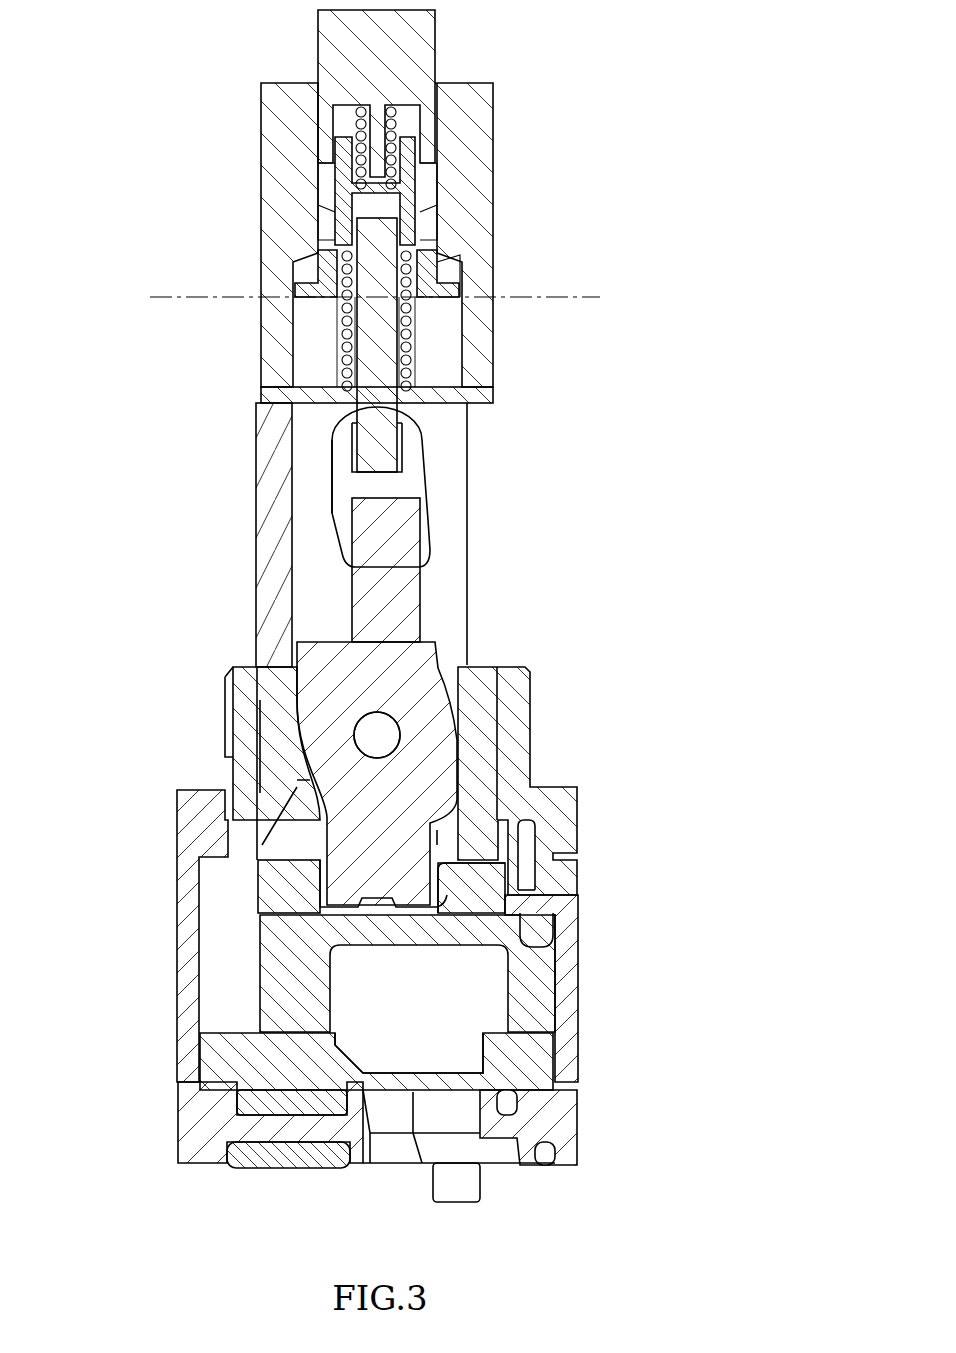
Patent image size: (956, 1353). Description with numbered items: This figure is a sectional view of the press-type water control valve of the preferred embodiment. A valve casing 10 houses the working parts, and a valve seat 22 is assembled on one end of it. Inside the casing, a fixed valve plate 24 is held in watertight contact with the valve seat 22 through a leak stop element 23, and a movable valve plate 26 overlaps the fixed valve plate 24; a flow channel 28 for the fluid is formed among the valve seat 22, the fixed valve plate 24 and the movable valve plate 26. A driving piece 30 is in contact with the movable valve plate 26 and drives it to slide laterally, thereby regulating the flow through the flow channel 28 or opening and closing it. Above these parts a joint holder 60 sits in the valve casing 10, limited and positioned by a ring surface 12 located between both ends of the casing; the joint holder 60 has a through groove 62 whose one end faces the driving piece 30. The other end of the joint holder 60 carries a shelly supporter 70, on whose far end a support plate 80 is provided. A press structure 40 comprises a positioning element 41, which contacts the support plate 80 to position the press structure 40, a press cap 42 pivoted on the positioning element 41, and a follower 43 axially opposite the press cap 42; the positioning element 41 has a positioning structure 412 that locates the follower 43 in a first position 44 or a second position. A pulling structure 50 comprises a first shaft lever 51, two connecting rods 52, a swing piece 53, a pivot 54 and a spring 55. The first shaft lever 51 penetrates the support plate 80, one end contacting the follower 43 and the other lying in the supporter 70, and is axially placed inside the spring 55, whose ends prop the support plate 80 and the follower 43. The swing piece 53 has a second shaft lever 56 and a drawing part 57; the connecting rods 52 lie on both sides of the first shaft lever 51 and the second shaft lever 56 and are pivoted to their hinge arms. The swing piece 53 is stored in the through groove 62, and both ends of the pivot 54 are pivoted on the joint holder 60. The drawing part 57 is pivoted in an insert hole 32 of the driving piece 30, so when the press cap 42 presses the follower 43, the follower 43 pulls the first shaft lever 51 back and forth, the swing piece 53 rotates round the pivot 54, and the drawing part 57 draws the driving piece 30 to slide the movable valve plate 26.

The valve casing 10 is at (177, 948).
The ring surface 12 is at (228, 843).
The valve seat 22 is at (193, 1118).
The leak stop element 23 is at (255, 1098).
The fixed valve plate 24 is at (225, 1052).
The movable valve plate 26 is at (275, 985).
The flow channel 28 is at (443, 1052).
The driving piece 30 is at (280, 880).
The insert hole 32 is at (320, 897).
The press structure 40 is at (497, 157).
The positioning element 41 is at (261, 222).
The press cap 42 is at (318, 55).
The positioning structure 412 is at (320, 210).
The follower 43 is at (412, 230).
The first position 44 is at (215, 297).
The pulling structure 50 is at (445, 517).
The first shaft lever 51 is at (377, 340).
The connecting rod 52 is at (425, 467).
The swing piece 53 is at (442, 748).
The pivot 54 is at (380, 735).
The spring 55 is at (350, 325).
The second shaft lever 56 is at (395, 600).
The drawing part 57 is at (407, 883).
The joint holder 60 is at (483, 793).
The through groove 62 is at (440, 837).
The supporter 70 is at (256, 587).
The support plate 80 is at (478, 398).